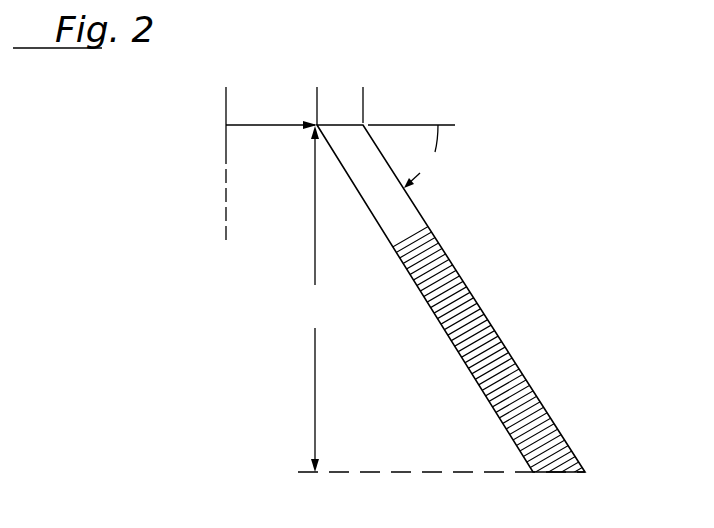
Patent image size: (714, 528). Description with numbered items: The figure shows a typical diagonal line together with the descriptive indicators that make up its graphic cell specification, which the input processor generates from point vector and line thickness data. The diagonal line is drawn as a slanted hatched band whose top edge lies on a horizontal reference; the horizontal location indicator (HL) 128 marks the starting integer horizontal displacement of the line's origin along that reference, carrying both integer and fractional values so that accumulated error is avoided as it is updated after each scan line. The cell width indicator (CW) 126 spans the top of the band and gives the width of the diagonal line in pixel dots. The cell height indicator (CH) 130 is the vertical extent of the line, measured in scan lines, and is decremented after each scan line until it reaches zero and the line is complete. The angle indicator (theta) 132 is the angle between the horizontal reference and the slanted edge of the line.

The cell width indicator (CW) 126 is at (341, 96).
The horizontal location indicator (HL) 128 is at (262, 96).
The cell height indicator (CH) 130 is at (300, 304).
The angle indicator (θ) 132 is at (434, 170).